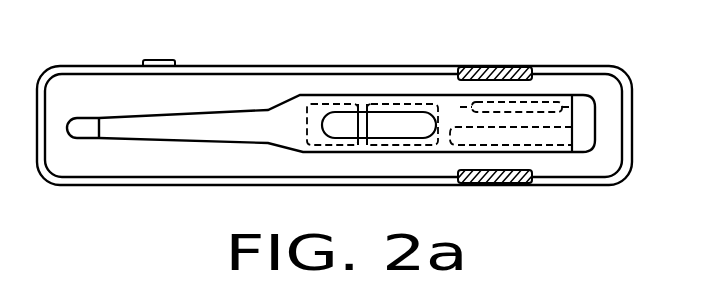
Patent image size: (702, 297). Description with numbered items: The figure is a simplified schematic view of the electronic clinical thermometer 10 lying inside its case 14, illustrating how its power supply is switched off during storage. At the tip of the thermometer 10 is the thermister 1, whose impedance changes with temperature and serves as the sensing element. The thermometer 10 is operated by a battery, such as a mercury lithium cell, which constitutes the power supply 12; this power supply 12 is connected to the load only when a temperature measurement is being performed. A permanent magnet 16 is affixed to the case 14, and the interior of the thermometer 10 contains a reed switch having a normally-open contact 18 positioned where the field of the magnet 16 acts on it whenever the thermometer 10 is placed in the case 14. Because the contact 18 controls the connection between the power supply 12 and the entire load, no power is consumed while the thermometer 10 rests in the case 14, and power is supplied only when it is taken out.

The thermister 1 is at (83, 133).
The electronic clinical thermometer 10 is at (183, 133).
The power supply 12 is at (557, 138).
The case 14 is at (176, 62).
The permanent magnet 16 is at (510, 45).
The normally-open contact 18 is at (547, 107).